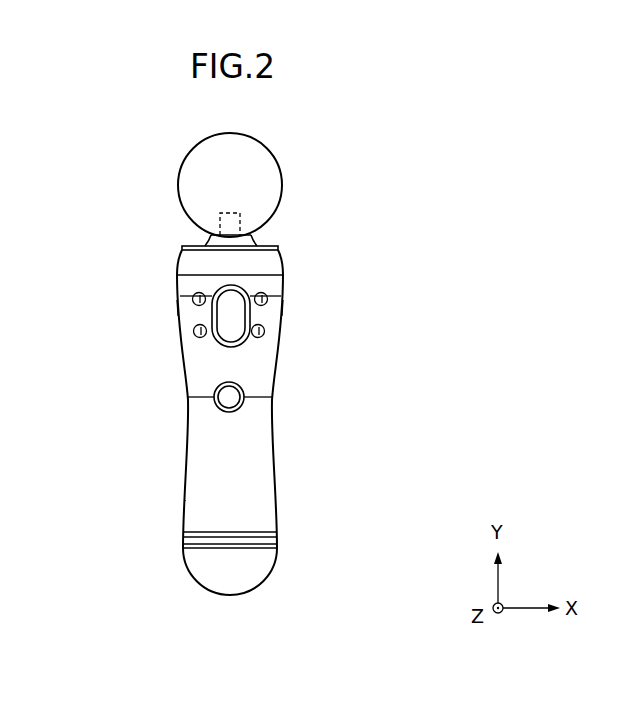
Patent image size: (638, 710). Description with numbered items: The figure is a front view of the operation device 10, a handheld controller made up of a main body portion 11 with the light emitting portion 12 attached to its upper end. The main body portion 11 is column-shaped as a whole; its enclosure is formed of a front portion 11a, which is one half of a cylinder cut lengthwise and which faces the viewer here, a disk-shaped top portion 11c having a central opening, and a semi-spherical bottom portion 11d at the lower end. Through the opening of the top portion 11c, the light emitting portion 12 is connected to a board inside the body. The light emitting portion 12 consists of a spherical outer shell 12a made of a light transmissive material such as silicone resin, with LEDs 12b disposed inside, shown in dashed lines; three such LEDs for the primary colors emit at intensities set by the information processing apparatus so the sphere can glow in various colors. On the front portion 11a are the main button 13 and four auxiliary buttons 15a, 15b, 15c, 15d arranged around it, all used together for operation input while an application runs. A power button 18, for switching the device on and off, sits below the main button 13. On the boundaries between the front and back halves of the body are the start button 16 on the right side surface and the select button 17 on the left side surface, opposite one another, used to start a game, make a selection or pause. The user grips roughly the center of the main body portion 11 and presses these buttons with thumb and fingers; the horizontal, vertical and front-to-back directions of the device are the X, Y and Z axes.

The operation device 10 is at (231, 393).
The main body portion 11 is at (231, 424).
The front portion 11a is at (263, 447).
The top portion 11c is at (276, 247).
The bottom portion 11d is at (258, 572).
The light emitting portion 12 is at (254, 189).
The spherical outer shell 12a is at (282, 182).
The LEDs 12b is at (222, 213).
The main button 13 is at (237, 312).
The auxiliary button 15a is at (265, 296).
The auxiliary button 15b is at (196, 296).
The auxiliary button 15c is at (262, 335).
The auxiliary button 15d is at (196, 334).
The start button 16 is at (293, 309).
The select button 17 is at (168, 310).
The power button 18 is at (241, 388).